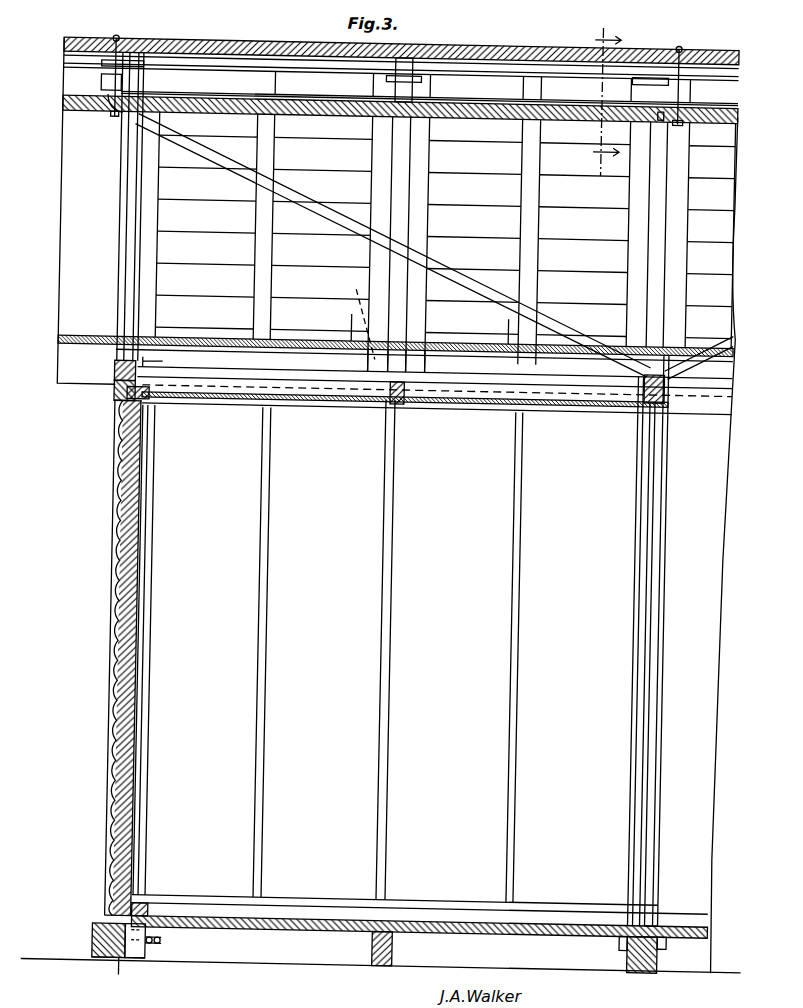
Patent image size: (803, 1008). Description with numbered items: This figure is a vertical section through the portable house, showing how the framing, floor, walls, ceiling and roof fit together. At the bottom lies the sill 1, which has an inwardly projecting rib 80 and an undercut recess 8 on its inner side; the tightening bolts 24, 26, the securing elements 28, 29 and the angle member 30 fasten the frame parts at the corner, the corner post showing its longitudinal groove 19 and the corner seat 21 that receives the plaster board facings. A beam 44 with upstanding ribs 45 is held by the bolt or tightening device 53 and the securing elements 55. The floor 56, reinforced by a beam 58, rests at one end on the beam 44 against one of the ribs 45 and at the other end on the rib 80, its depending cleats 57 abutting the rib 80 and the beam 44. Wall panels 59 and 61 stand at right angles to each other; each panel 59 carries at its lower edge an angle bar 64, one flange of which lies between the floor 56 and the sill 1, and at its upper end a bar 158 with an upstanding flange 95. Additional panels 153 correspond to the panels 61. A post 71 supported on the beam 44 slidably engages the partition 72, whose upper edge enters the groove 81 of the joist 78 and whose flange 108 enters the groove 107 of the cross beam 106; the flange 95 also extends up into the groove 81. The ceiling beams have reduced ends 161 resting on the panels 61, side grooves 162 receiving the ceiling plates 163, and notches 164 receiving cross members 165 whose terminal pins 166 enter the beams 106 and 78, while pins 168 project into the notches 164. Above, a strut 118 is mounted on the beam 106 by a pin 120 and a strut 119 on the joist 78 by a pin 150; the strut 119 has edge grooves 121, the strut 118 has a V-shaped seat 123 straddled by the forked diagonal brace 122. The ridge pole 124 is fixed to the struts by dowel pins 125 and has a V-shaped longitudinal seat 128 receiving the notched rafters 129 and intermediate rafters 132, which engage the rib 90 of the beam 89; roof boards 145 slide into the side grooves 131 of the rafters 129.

The sill 1 is at (110, 966).
The undercut recess 8 is at (606, 94).
The longitudinal groove 19 is at (128, 980).
The seat 21 is at (162, 952).
The tightening bolt 24 is at (112, 942).
The tightening bolt 26 is at (157, 950).
The securing element 28 is at (136, 950).
The securing element 29 is at (167, 950).
The angle member 30 is at (101, 958).
The beam 44 is at (672, 944).
The upstanding ribs 45 is at (664, 920).
The bolt or tightening device 53 is at (636, 955).
The securing elements 55 is at (628, 940).
The floor 56 is at (300, 918).
The depending cleats 57 is at (160, 920).
The beam 58 is at (380, 946).
The wall panels 59 is at (118, 706).
The wall panels 61 is at (400, 655).
The angle bar 64 is at (128, 918).
The post 71 is at (640, 606).
The partition 72 is at (665, 690).
The joist 78 is at (114, 380).
The rib 80 is at (148, 910).
The groove 81 is at (116, 396).
The beam 89 is at (460, 348).
The rib 90 is at (303, 344).
The upstanding flange 95 is at (120, 408).
The cross beam 106 is at (666, 392).
The groove 107 is at (640, 398).
The flange 108 is at (650, 404).
The strut 118 is at (660, 306).
The strut 119 is at (114, 252).
The pin 120 is at (664, 378).
The grooves 121 is at (121, 290).
The diagonal brace 122 is at (468, 278).
The V-shaped transverse seat 123 is at (132, 120).
The ridge pole 124 is at (365, 118).
The dowel pins 125 is at (118, 108).
The longitudinal seat 128 is at (505, 106).
The rafters 129 is at (114, 66).
The side grooves 131 is at (106, 120).
The intermediate rafters 132 is at (256, 210).
The boards 145 is at (352, 372).
The pin 150 is at (112, 372).
The additional panels 153 is at (710, 778).
The bar 158 is at (148, 402).
The reduced ends 161 is at (390, 406).
The side grooves 162 is at (398, 388).
The ceiling plates 163 is at (258, 400).
The notches 164 is at (395, 400).
The cross members 165 is at (445, 374).
The terminal pins 166 is at (145, 368).
The pins 168 is at (364, 300).